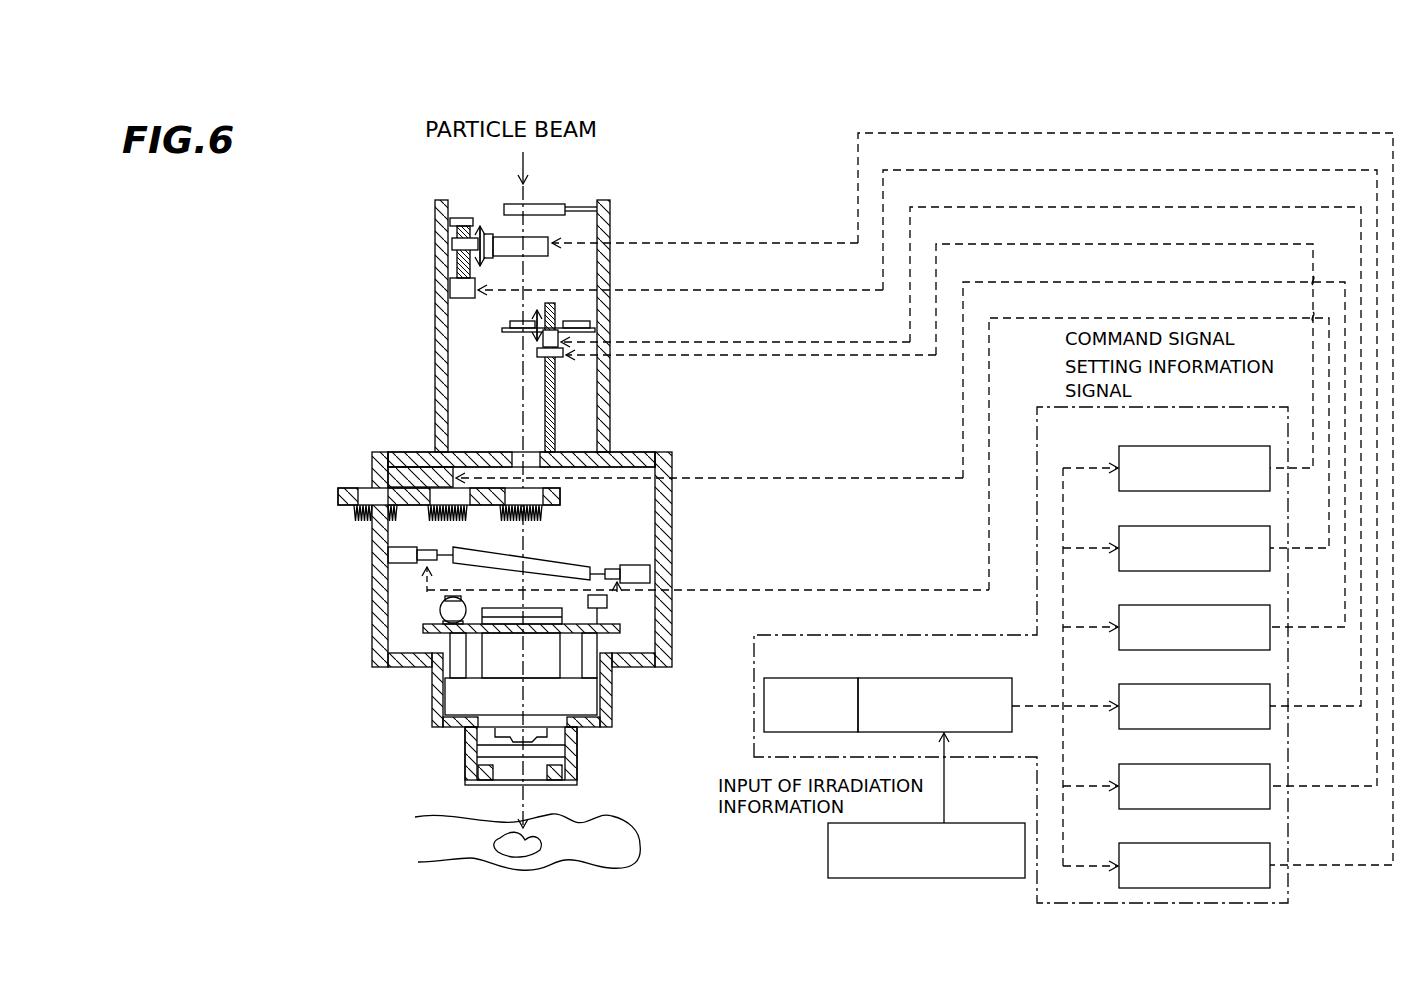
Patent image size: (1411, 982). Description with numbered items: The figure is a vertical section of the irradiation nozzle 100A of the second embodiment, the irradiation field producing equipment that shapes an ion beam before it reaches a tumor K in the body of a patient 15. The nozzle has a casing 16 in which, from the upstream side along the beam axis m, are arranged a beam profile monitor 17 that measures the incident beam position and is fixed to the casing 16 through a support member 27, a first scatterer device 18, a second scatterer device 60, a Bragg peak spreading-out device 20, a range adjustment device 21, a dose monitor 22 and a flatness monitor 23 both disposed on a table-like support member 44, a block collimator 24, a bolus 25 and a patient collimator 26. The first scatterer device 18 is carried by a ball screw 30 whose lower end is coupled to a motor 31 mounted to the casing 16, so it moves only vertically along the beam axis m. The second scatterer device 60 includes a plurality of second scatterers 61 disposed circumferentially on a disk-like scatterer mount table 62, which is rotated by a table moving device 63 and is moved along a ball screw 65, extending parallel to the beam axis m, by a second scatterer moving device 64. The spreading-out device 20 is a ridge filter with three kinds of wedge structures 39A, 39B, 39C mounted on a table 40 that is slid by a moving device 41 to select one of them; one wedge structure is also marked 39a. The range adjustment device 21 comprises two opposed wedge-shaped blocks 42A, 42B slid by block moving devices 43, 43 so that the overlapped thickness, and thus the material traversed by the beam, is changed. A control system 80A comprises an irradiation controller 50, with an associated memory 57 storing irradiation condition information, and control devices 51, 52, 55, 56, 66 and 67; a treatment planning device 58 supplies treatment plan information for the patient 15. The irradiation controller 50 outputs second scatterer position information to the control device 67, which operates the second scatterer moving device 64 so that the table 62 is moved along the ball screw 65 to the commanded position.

The irradiation nozzle 100A is at (385, 196).
The patient 15 is at (640, 843).
The casing 16 is at (610, 413).
The beam profile monitor 17 is at (540, 204).
The first scatterer device 18 is at (554, 236).
The Bragg peak spreading-out device 20 is at (337, 496).
The range adjustment device 21 is at (590, 545).
The dose monitor 22 is at (592, 613).
The flatness monitor 23 is at (533, 622).
The block collimator 24 is at (463, 699).
The bolus 25 is at (572, 752).
The patient collimator 26 is at (566, 777).
The support member 27 is at (580, 207).
The ball screw 30 is at (452, 243).
The motor 31 is at (458, 268).
The wedge structure 39A is at (358, 518).
The wedge structure 39B is at (450, 522).
The wedge structure 39C is at (505, 522).
The brush 39a is at (540, 520).
The support member (table) 40 is at (560, 496).
The moving device 41 is at (375, 477).
The wedge-shaped block 42A is at (472, 557).
The wedge-shaped block 42B is at (585, 571).
The block moving device 43 is at (402, 556).
The table-like support member 44 is at (620, 630).
The irradiation controller 50 is at (926, 680).
The control device 51 is at (1171, 843).
The control device 52 is at (1171, 764).
The control device 55 is at (1171, 605).
The control device 56 is at (1171, 526).
The memory 57 is at (826, 680).
The treatment planning device 58 is at (828, 850).
The second scatterer device 60 is at (382, 290).
The second scatterers 61 is at (516, 296).
The scatterer mount table 62 is at (512, 324).
The table moving device 63 is at (542, 340).
The second scatterer moving device 64 is at (537, 356).
The ball screw 65 is at (556, 392).
The control device 66 is at (1171, 684).
The control device 67 is at (1171, 446).
The control system 80A is at (842, 633).
The beam axis m is at (522, 428).
The tumor K is at (505, 833).